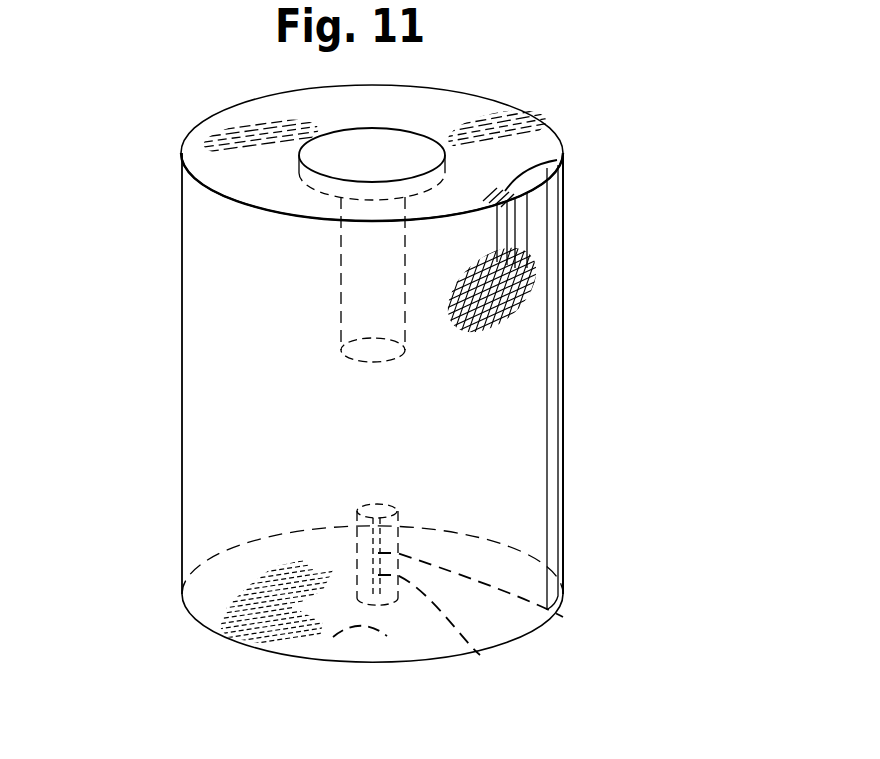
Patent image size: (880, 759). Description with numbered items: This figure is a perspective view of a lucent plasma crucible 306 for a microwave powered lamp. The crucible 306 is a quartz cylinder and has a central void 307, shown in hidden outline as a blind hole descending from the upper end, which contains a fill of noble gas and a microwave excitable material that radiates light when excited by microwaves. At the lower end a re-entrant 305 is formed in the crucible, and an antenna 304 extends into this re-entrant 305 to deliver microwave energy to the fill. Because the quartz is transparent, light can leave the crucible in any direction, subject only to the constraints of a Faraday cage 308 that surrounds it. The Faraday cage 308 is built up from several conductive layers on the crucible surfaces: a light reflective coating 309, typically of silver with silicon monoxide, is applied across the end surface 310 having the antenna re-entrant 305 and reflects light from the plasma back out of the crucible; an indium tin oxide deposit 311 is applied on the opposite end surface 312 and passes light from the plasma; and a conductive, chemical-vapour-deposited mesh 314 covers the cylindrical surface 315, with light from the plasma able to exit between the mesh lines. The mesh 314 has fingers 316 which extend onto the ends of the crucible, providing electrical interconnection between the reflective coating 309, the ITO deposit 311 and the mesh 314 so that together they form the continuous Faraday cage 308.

The antenna 304 is at (480, 655).
The re-entrant 305 is at (563, 617).
The lucent plasma crucible 306 is at (565, 402).
The central void 307 is at (337, 287).
The Faraday cage 308 is at (510, 278).
The light reflective coating 309 is at (253, 580).
The end surface 310 is at (333, 637).
The indium tin oxide deposit 311 is at (258, 137).
The end surface 312 is at (428, 108).
The conductive mesh 314 is at (558, 289).
The cylindrical surface 315 is at (473, 467).
The fingers 316 is at (557, 160).